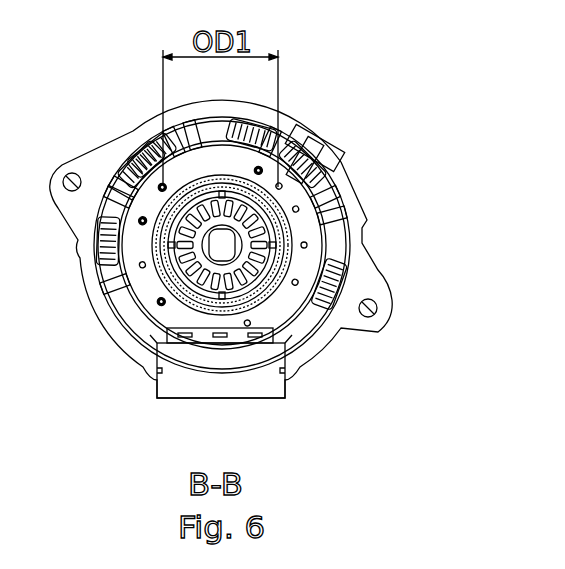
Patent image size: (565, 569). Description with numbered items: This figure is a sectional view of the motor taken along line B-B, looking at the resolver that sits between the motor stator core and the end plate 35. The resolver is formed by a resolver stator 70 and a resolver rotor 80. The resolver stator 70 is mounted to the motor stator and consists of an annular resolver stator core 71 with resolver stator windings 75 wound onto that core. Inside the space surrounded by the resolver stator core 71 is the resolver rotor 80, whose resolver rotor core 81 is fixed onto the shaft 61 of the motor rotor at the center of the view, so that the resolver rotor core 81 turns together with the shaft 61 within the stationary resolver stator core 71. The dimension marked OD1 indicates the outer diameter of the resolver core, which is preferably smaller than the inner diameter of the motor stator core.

The end plate 35 is at (360, 278).
The resolver stator 70 is at (372, 356).
The resolver stator core 71 is at (240, 263).
The resolver stator windings 75 is at (262, 280).
The resolver rotor 80 is at (64, 346).
The resolver rotor core 81 is at (212, 263).
The shaft 61 is at (220, 246).